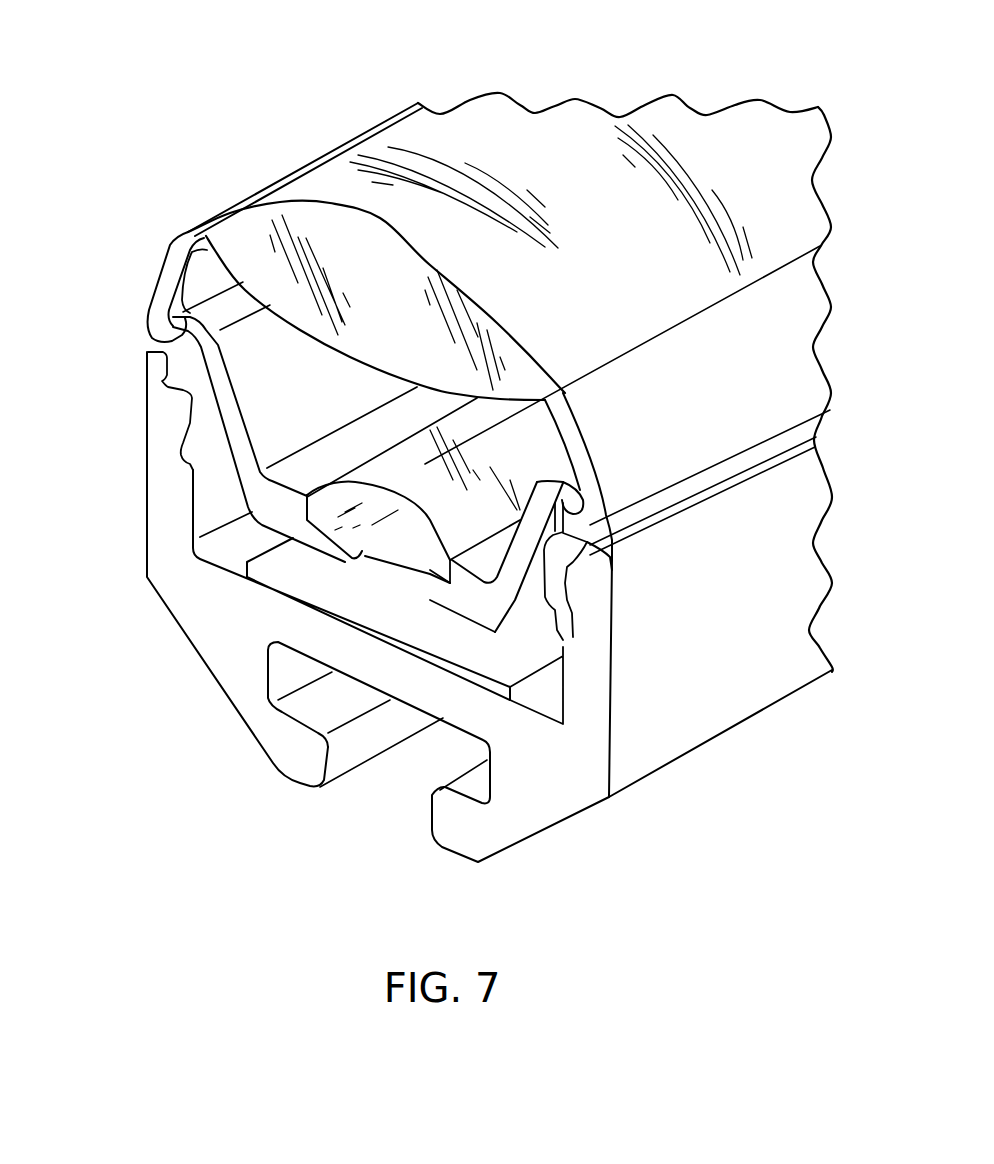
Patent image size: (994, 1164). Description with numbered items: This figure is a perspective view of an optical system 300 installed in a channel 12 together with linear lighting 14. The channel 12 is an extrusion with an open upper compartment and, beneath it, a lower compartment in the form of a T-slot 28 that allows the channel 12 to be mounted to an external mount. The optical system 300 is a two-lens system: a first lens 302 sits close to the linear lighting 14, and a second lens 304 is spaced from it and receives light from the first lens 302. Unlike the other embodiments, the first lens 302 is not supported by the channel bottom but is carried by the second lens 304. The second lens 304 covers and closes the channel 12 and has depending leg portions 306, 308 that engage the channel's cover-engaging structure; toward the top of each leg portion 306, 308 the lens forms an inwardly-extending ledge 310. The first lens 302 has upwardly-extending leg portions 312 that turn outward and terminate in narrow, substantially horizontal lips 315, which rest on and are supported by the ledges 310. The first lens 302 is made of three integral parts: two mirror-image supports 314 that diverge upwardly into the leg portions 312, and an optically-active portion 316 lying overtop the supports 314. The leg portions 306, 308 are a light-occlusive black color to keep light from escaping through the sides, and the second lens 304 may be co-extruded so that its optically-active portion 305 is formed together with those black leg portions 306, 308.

The optical system 300 is at (274, 168).
The second lens 304 is at (521, 130).
The optically-active portion 305 is at (456, 130).
The first lens 302 is at (313, 463).
The lip 315 is at (183, 278).
The ledge 310 is at (172, 335).
The leg portion 312 is at (215, 372).
The leg portion 306 is at (200, 412).
The channel 12 is at (137, 469).
The linear lighting 14 is at (352, 594).
The support 314 is at (265, 501).
The optically-active portion 316 is at (426, 491).
The leg portion 308 is at (567, 613).
The T-slot 28 is at (400, 785).